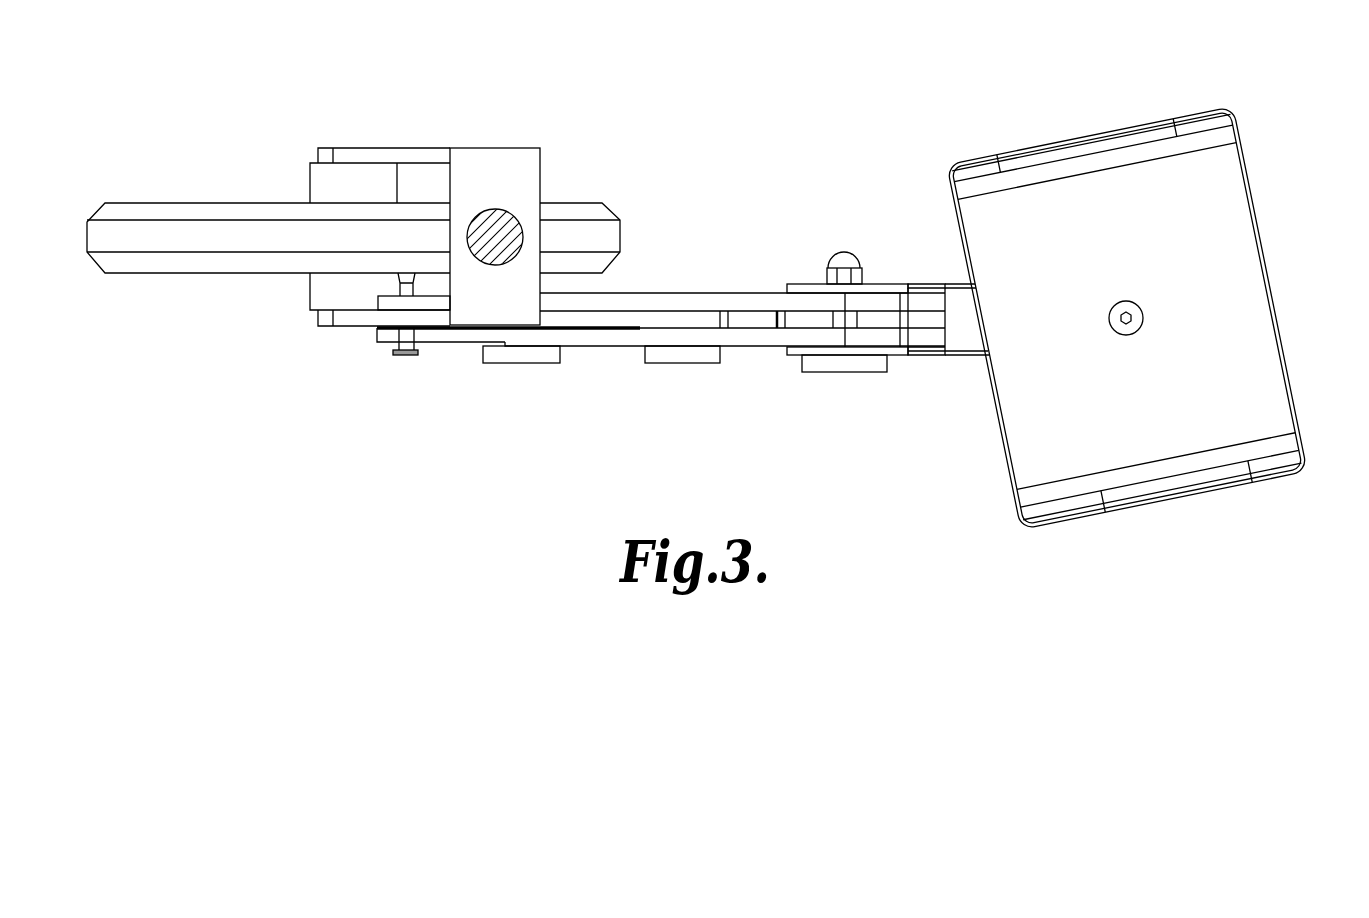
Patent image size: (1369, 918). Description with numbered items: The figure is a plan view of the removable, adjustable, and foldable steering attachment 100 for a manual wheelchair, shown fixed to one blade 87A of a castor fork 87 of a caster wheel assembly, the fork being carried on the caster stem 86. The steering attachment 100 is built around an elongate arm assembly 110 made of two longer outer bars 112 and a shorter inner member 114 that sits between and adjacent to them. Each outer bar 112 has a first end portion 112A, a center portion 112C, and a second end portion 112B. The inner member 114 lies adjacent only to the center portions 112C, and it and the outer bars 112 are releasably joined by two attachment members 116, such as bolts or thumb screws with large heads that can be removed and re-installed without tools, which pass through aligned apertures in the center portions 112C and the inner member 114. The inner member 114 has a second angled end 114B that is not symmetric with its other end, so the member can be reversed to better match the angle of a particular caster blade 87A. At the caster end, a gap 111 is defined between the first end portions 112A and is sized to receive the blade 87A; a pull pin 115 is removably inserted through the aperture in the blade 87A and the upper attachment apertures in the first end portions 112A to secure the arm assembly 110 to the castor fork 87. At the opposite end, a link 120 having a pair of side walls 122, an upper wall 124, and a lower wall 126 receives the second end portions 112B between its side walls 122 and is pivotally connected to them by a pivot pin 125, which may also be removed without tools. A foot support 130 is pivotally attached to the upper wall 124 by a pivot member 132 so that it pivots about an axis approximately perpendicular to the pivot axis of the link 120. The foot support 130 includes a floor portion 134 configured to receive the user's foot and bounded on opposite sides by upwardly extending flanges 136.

The support rod 86 is at (168, 278).
The castor fork 87 is at (492, 139).
The blade 87A is at (345, 322).
The steering attachment 100 is at (814, 106).
The arm assembly 110 is at (766, 280).
The gap 111 is at (374, 330).
The outer bars 112 is at (641, 288).
The first end portion 112A is at (452, 343).
The second end portion 112B is at (869, 304).
The center portion 112C is at (753, 347).
The inner member 114 is at (710, 321).
The second angled end 114B is at (742, 318).
The pull pin 115 is at (404, 356).
The attachment members 116 is at (523, 364).
The link 120 is at (949, 362).
The side walls 122 is at (810, 288).
The upper wall 124 is at (963, 306).
The pivot pin 125 is at (850, 373).
The lower wall 126 is at (928, 314).
The foot support 130 is at (1246, 136).
The pivot member 132 is at (1143, 304).
The floor portion 134 is at (1240, 215).
The flanges 136 is at (1198, 118).